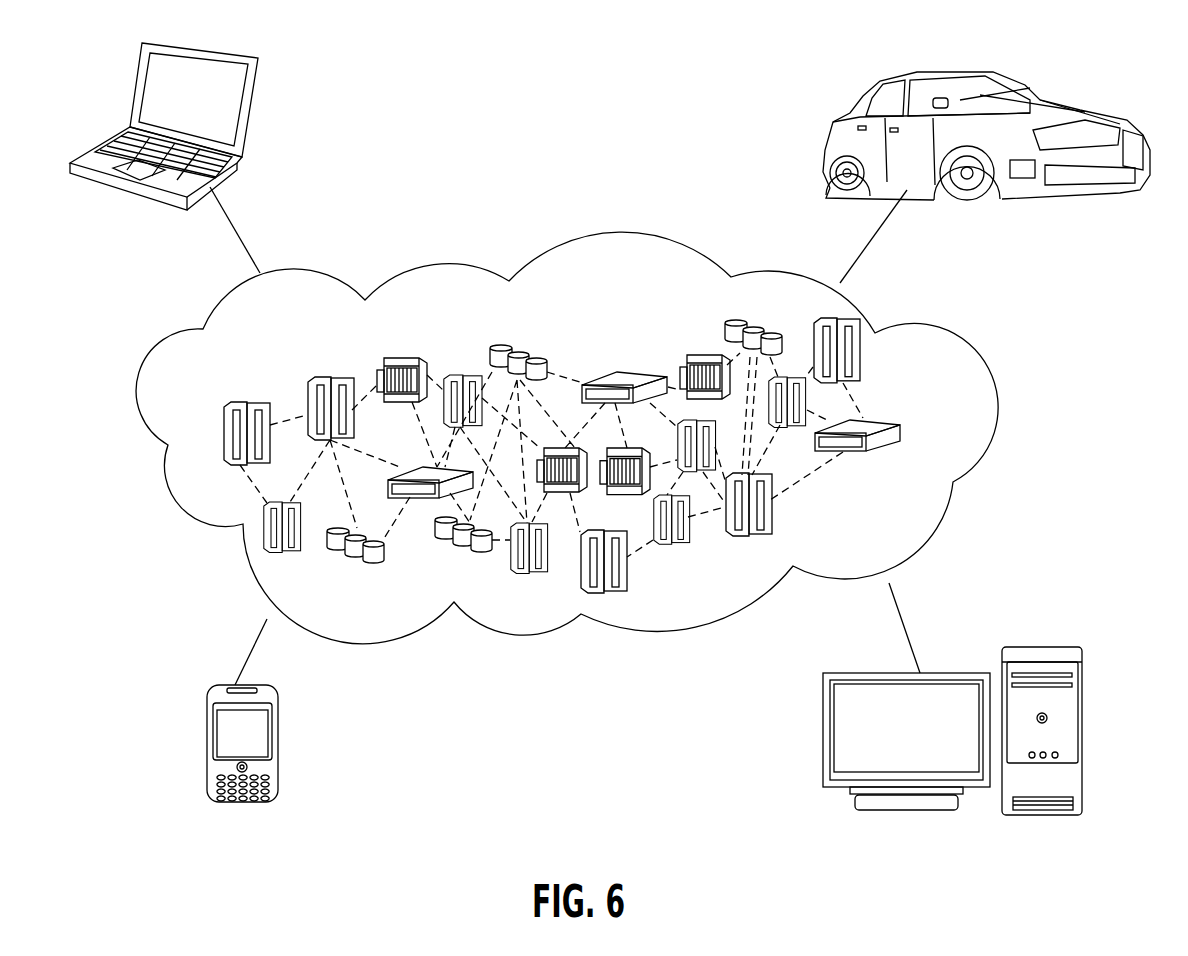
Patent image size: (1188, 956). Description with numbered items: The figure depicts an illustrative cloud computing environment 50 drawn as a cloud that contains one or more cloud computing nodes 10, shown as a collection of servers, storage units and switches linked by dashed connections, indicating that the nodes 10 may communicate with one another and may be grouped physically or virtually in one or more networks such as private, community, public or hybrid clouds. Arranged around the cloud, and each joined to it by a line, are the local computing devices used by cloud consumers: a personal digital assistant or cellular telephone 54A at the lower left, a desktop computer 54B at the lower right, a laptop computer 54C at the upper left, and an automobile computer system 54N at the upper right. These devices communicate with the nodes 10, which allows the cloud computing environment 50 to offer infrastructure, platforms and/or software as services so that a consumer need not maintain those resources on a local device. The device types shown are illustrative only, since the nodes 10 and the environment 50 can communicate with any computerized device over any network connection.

The laptop computer 54C is at (247, 112).
The automobile computer system 54N is at (835, 122).
The personal digital assistant (PDA) or cellular telephone 54A is at (210, 748).
The desktop computer 54B is at (1047, 647).
The cloud computing environment 50 is at (963, 347).
The cloud computing nodes 10 is at (647, 455).